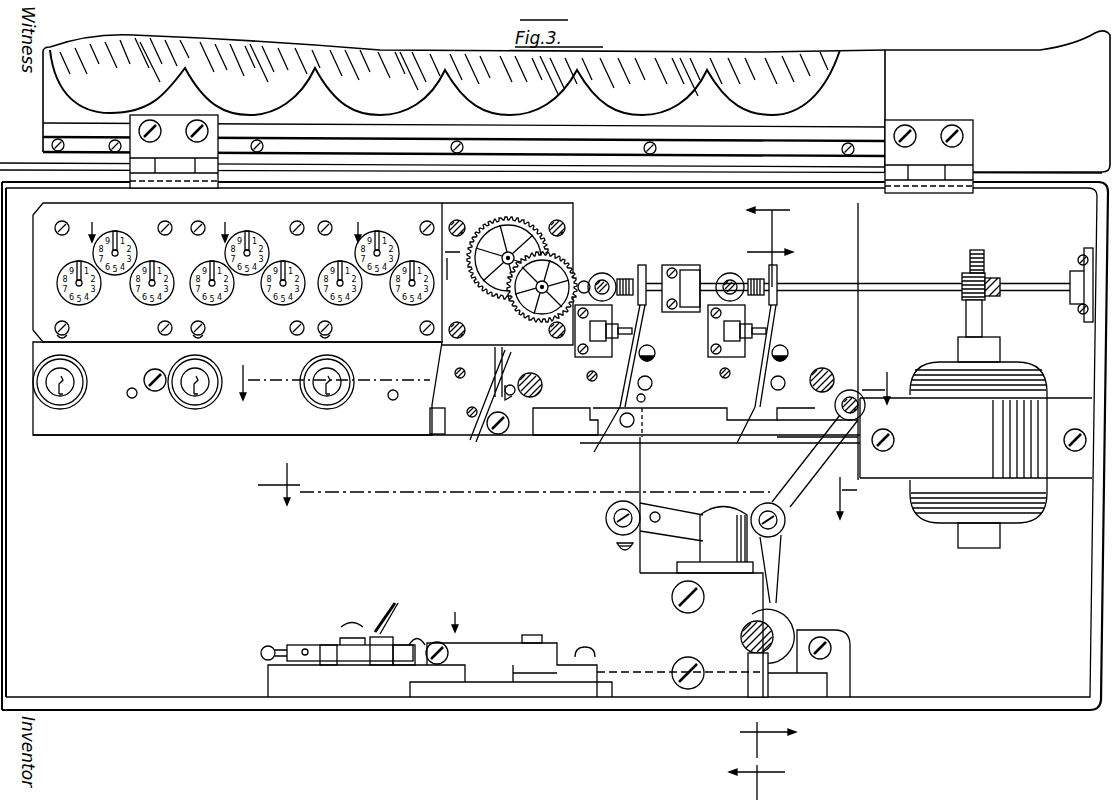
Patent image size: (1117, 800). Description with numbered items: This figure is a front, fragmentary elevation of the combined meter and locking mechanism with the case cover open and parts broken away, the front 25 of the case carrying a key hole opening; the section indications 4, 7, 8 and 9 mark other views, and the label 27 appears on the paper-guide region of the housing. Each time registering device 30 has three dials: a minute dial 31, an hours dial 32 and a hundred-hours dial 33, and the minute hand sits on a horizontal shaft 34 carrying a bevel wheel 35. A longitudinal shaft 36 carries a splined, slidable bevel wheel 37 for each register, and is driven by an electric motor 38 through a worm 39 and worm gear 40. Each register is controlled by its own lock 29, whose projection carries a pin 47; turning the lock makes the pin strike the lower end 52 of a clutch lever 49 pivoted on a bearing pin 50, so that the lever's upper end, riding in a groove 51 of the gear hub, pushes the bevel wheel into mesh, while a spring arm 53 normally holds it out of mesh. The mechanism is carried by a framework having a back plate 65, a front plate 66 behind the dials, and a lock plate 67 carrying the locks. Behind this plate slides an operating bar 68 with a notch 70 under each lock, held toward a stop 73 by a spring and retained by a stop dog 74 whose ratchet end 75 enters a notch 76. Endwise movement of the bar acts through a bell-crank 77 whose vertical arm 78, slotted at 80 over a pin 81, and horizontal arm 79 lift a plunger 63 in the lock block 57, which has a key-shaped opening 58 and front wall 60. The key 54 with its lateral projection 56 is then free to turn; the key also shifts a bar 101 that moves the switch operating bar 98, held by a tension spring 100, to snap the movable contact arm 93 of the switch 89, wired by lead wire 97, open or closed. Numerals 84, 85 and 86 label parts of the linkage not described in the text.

The section line 4- 4 is at (565, 385).
The section line 7- 7 is at (557, 491).
The section line 8- 8 is at (768, 496).
The section line 9- 9 is at (759, 494).
The front of the case 25 is at (0, 132).
The paper guide bar 27 is at (690, 66).
The lock 29 is at (80, 372).
The time registering device 30 is at (221, 224).
The first dial 31 is at (60, 272).
The second dial 32 is at (128, 236).
The third dial 33 is at (143, 303).
The horizontal shaft 34 is at (476, 287).
The bevel wheel 35 is at (598, 274).
The longitudinally arranged shaft 36 is at (810, 284).
The bevel wheel 37 is at (641, 270).
The electric motor 38 is at (938, 368).
The worm 39 is at (963, 281).
The worm gear 40 is at (986, 257).
The pin 47 is at (460, 368).
The clutch lever 49 is at (641, 326).
The bearing pin 50 is at (653, 354).
The groove 51 is at (652, 272).
The lower end of lever 52 is at (475, 404).
The spring arm 53 is at (514, 384).
The key 54 is at (773, 631).
The lateral projection 56 is at (748, 688).
The lock block 57 is at (650, 623).
The opening 58 is at (742, 630).
The front wall 60 is at (707, 692).
The plunger 63 is at (729, 510).
The back plate 65 is at (858, 216).
The front plate 66 is at (35, 287).
The auxiliary bar or flat plate 67 is at (125, 418).
The operating bar 68 is at (446, 437).
The notch 70 is at (720, 437).
The stop 73 is at (853, 391).
The stop dog 74 is at (815, 461).
The ratchet shaped end 75 is at (804, 442).
The notch 76 is at (822, 368).
The bell-crank 77 is at (598, 532).
The vertical arm 78 is at (610, 493).
The horizontal arm 79 is at (673, 522).
The longitudinal slot 80 is at (446, 437).
The pin 81 is at (634, 425).
The pivot ring 84 is at (793, 507).
The pivot screw 85 is at (790, 523).
The cam lever 86 is at (773, 575).
The switch 89 is at (454, 612).
The movable spring contact arm 93 is at (306, 650).
The lead wire 97 is at (392, 609).
The operating bar 98 is at (472, 649).
The tension spring 100 is at (429, 638).
The bar 101 is at (832, 680).